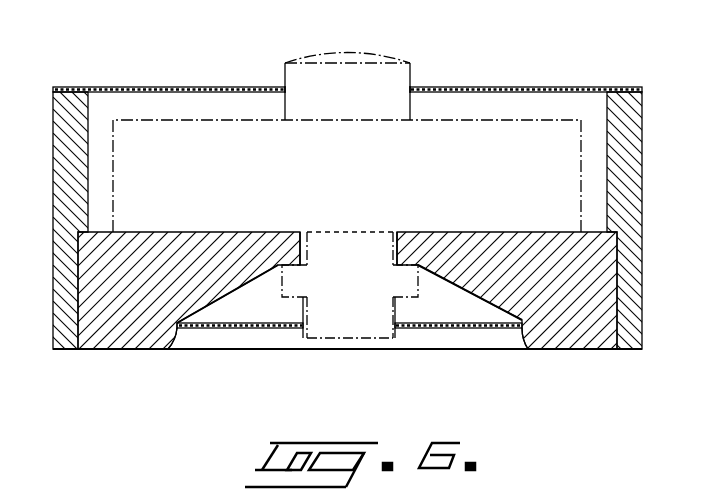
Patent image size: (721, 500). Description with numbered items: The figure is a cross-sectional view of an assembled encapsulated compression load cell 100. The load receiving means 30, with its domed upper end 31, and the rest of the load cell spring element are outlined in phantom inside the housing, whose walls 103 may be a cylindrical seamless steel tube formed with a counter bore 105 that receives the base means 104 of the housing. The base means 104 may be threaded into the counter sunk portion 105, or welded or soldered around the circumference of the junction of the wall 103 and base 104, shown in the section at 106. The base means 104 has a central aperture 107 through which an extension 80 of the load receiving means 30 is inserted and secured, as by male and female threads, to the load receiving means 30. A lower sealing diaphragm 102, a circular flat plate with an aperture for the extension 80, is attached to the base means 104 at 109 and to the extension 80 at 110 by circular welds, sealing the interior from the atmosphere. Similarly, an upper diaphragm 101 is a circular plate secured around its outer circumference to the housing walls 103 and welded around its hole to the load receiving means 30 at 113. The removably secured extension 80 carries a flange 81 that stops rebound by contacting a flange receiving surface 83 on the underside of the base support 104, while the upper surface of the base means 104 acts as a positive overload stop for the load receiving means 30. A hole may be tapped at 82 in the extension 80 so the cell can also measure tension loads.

The encapsulated compression load cell 100 is at (523, 82).
The upper diaphragm 101 is at (233, 87).
The weld at the diaphragm hole 113 is at (285, 86).
The domed end of stem 31 is at (363, 55).
The load receiving means 30 is at (412, 109).
The housing walls 103 is at (53, 172).
The counter bore 105 is at (617, 311).
The aperture 107 is at (294, 246).
The flange receiving surface 83 is at (288, 268).
The flange 81 is at (284, 291).
The extension 80 is at (394, 308).
The tapped hole 82 is at (352, 348).
The lower sealing diaphragm 102 is at (453, 330).
The weld around the diaphragm aperture 110 is at (305, 332).
The weld of lower diaphragm to base 109 is at (177, 332).
The base means 104 is at (103, 350).
The junction of wall and base 106 is at (78, 350).